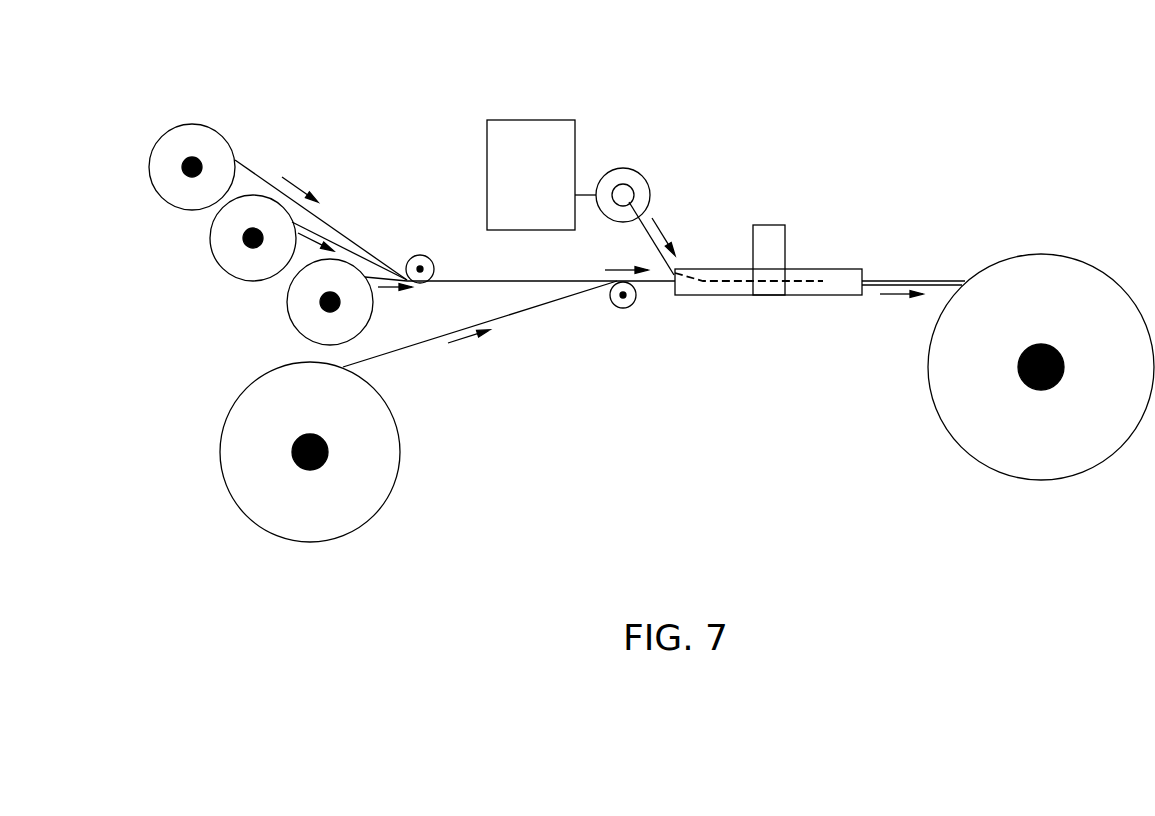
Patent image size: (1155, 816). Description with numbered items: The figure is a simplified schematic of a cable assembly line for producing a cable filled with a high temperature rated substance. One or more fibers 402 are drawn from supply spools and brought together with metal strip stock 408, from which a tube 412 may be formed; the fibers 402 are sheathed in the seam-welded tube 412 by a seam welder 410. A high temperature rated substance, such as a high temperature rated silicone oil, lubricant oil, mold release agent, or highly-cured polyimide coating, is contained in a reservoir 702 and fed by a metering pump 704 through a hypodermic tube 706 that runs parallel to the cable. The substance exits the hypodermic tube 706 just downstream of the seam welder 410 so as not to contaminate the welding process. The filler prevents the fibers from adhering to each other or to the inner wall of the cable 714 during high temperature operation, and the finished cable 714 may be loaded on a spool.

The fibers 402 is at (260, 170).
The metal strip stock 408 is at (530, 310).
The seam welder 410 is at (767, 225).
The seam-welded tube 412 is at (713, 295).
The reservoir 702 is at (538, 120).
The metering pump 704 is at (643, 170).
The hypodermic tube 706 is at (805, 280).
The cable 714 is at (917, 282).